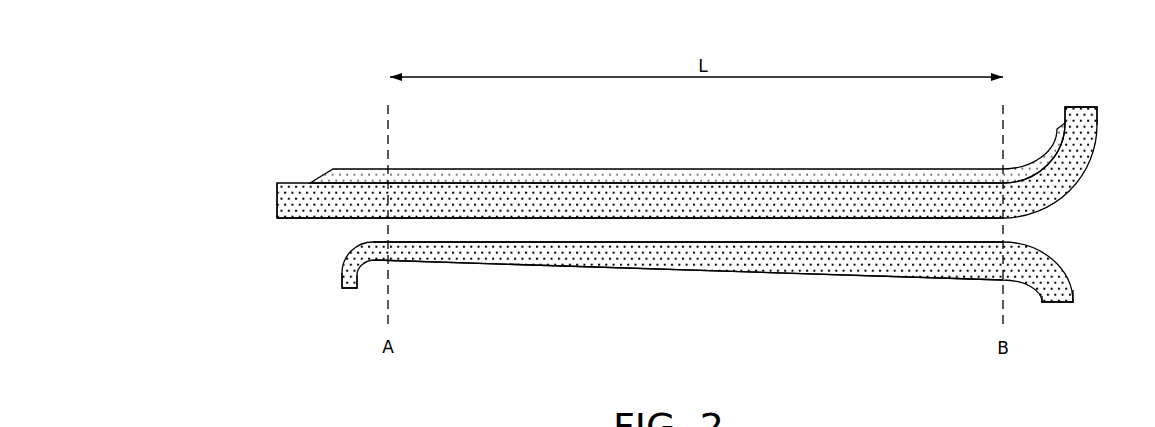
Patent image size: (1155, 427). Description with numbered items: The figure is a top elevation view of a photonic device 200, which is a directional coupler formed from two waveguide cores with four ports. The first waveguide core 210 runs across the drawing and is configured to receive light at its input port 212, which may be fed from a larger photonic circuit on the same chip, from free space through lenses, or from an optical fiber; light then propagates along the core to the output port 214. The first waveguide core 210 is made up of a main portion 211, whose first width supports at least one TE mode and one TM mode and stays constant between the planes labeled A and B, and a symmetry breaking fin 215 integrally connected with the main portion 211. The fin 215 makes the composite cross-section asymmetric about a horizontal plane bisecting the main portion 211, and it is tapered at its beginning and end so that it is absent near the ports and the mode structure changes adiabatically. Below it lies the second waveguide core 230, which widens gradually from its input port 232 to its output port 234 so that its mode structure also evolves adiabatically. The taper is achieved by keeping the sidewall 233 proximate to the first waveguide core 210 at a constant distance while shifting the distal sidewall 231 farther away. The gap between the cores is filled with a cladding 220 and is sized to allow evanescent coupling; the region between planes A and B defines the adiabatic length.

The photonic device 200 is at (450, 60).
The first waveguide core 210 is at (783, 155).
The main portion 211 is at (310, 218).
The input port 212 is at (277, 187).
The output port 214 is at (1085, 107).
The symmetry breaking fin 215 is at (545, 169).
The cladding 220 is at (1037, 228).
The second waveguide core 230 is at (687, 257).
The distal sidewall 231 is at (782, 275).
The input port 232 is at (348, 290).
The proximate sidewall 233 is at (883, 243).
The output port 234 is at (1058, 305).